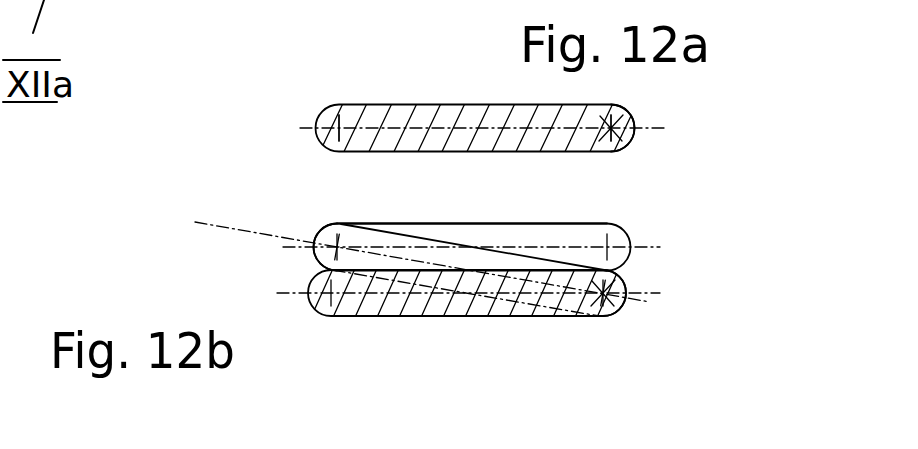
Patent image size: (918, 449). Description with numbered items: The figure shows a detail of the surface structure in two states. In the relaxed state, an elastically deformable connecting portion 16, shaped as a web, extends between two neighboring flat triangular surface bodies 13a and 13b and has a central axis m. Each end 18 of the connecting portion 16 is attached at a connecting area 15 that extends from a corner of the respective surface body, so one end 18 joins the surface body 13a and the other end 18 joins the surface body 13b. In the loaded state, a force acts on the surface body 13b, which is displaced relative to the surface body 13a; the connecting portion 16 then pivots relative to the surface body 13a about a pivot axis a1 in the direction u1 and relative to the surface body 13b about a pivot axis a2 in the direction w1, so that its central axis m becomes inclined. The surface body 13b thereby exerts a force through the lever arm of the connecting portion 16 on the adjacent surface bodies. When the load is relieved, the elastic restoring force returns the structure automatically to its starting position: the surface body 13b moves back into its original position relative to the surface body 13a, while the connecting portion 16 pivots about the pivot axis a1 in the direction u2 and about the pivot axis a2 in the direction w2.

In FIG. 12B, the surface body 13a is at (479, 226).
In FIG. 12B, the surface body 13b is at (426, 306).
In FIG. 12A, the connecting area 15 is at (632, 112).
In FIG. 12B, the connecting area 15 is at (318, 233).
In FIG. 12A, the connecting portion 16 is at (433, 105).
In FIG. 12B, the connecting portion 16 is at (397, 262).
In FIG. 12A, the end of the connecting portion 18 is at (368, 105).
In FIG. 12B, the end of the connecting portion 18 is at (341, 264).
In FIG. 12A, the pivot axis a1 is at (333, 125).
In FIG. 12B, the pivot axis a1 is at (335, 248).
In FIG. 12A, the pivot axis a2 is at (627, 146).
In FIG. 12B, the pivot axis a2 is at (618, 314).
In FIG. 12B, the central axis m is at (215, 224).
In FIG. 12B, the direction u1 is at (132, 276).
In FIG. 12B, the direction u2 is at (113, 281).
In FIG. 12B, the direction w1 is at (709, 390).
In FIG. 12B, the direction w2 is at (707, 370).